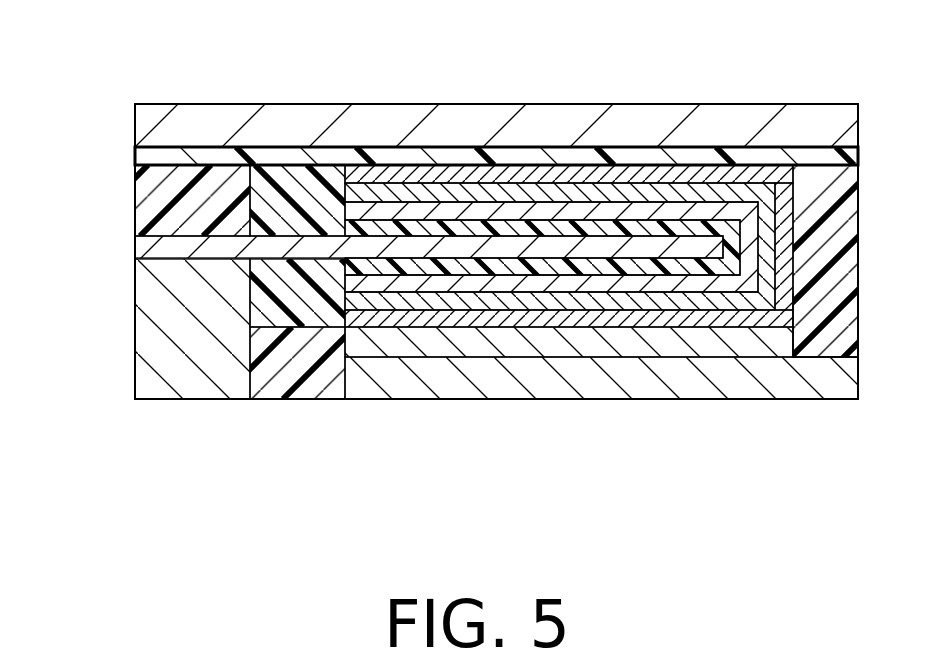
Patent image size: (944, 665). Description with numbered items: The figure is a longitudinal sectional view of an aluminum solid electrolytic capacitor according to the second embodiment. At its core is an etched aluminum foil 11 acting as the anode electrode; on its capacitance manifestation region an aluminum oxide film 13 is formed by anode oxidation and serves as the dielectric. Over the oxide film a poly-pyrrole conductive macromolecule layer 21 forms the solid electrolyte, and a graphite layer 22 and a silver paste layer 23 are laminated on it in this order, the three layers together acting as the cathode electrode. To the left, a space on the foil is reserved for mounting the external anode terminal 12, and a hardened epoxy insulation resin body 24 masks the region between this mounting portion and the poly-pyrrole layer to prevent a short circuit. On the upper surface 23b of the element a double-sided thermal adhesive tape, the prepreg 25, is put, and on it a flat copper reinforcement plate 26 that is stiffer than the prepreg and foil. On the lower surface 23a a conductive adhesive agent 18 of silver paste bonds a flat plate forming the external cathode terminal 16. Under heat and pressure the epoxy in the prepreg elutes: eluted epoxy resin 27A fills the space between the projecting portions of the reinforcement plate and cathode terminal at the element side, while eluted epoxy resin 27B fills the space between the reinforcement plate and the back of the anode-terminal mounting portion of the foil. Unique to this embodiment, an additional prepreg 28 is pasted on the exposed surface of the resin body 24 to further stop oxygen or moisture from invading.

The double-sided thermal adhesive tape (prepreg) 25 is at (198, 145).
The insulation resin body 24 is at (302, 178).
The silver paste layer 23 is at (380, 162).
The upper surface 23b is at (467, 178).
The graphite layer 22 is at (560, 195).
The conductive macromolecule layer 21 is at (637, 210).
The aluminum oxide film 13 is at (717, 230).
The reinforcement plate 26 is at (786, 135).
The eluted epoxy resin 27B is at (156, 203).
The aluminum foil 11 is at (155, 250).
The external anode terminal 12 is at (192, 375).
The additional prepreg 28 is at (317, 370).
The external cathode terminal 16 is at (453, 377).
The lower surface 23a is at (563, 328).
The conductive adhesive agent 18 is at (690, 345).
The eluted epoxy resin 27A is at (823, 343).